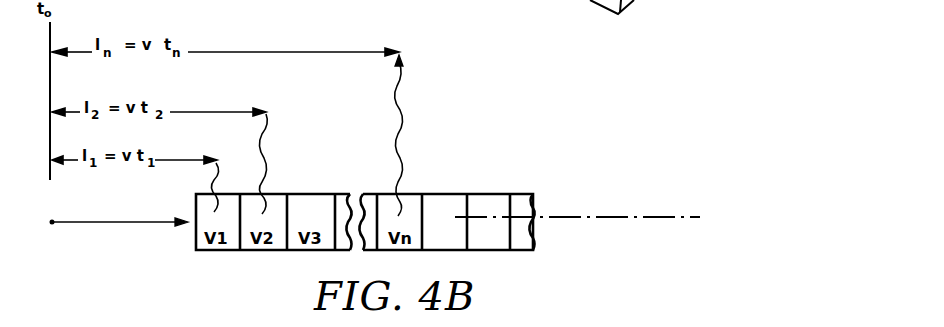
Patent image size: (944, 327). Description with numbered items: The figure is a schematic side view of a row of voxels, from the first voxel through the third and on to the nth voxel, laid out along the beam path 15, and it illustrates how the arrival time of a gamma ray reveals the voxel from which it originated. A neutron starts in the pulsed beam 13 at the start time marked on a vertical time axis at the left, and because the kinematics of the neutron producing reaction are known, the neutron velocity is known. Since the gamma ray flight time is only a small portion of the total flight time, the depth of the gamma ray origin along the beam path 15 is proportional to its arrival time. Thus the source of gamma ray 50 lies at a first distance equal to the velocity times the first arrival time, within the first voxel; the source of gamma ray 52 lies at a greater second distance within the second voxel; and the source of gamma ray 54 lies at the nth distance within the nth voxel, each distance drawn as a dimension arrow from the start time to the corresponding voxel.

The pulsed beam 13 is at (118, 222).
The beam path 15 is at (590, 190).
The gamma ray 50 is at (212, 186).
The gamma ray 52 is at (265, 158).
The gamma ray 54 is at (400, 163).